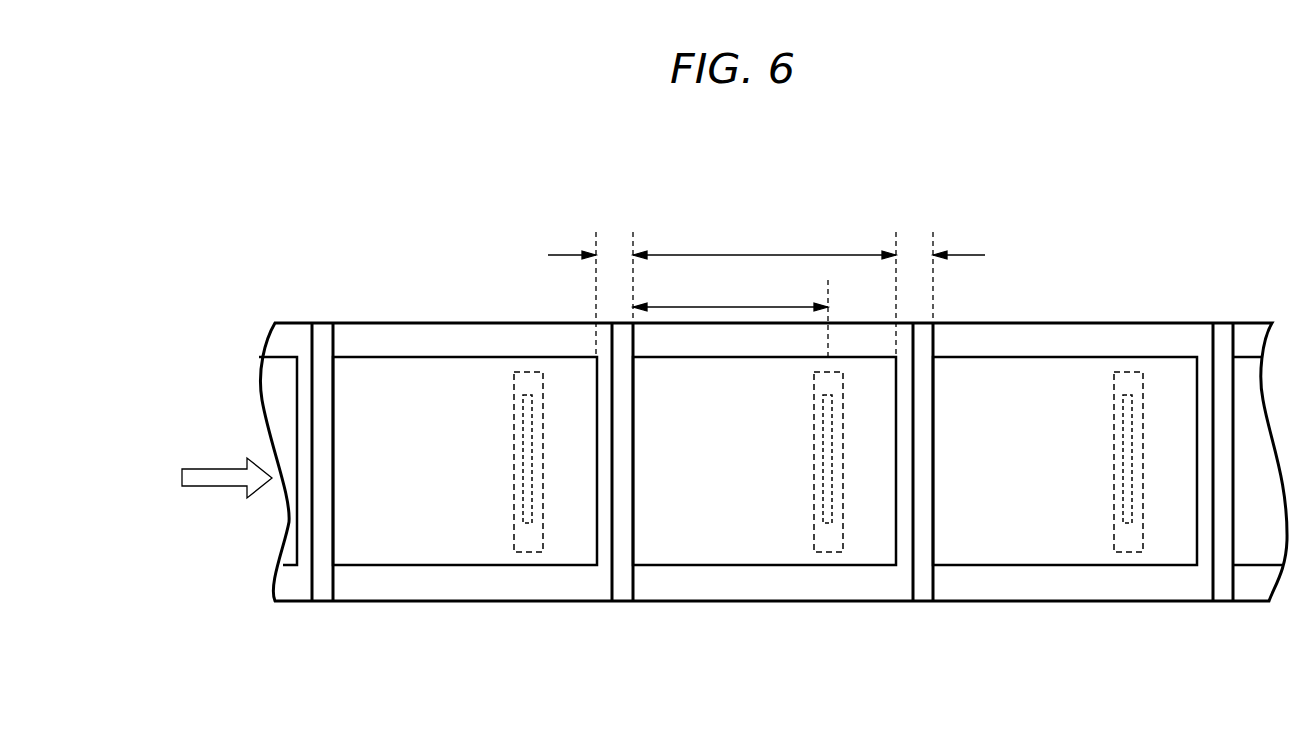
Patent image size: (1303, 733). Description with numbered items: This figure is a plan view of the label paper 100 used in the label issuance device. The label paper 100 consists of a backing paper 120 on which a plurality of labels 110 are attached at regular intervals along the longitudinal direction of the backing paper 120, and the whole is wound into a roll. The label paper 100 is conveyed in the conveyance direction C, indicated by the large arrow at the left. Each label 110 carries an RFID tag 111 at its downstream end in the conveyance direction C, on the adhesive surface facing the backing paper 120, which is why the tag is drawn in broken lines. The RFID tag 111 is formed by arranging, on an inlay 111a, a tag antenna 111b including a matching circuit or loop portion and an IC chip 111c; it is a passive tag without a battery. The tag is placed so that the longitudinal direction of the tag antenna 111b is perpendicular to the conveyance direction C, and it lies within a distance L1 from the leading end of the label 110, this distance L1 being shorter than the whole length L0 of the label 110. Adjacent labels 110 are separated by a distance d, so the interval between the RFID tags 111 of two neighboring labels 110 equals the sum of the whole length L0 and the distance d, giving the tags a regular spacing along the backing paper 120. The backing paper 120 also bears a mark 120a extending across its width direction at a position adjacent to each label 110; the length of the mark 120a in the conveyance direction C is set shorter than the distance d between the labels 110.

The label paper 100 is at (1197, 178).
The label 110 is at (1065, 375).
The RFID tag 111 is at (809, 515).
The inlay 111a is at (1127, 548).
The tag antenna 111b is at (1123, 423).
The IC chip 111c is at (1140, 461).
The backing paper 120 is at (351, 333).
The mark 120a is at (1223, 600).
The conveyance direction C is at (213, 469).
The distance between adjacent labels d is at (766, 292).
The whole length of the label L0 is at (764, 244).
The distance from the leading end of the label L1 is at (730, 317).